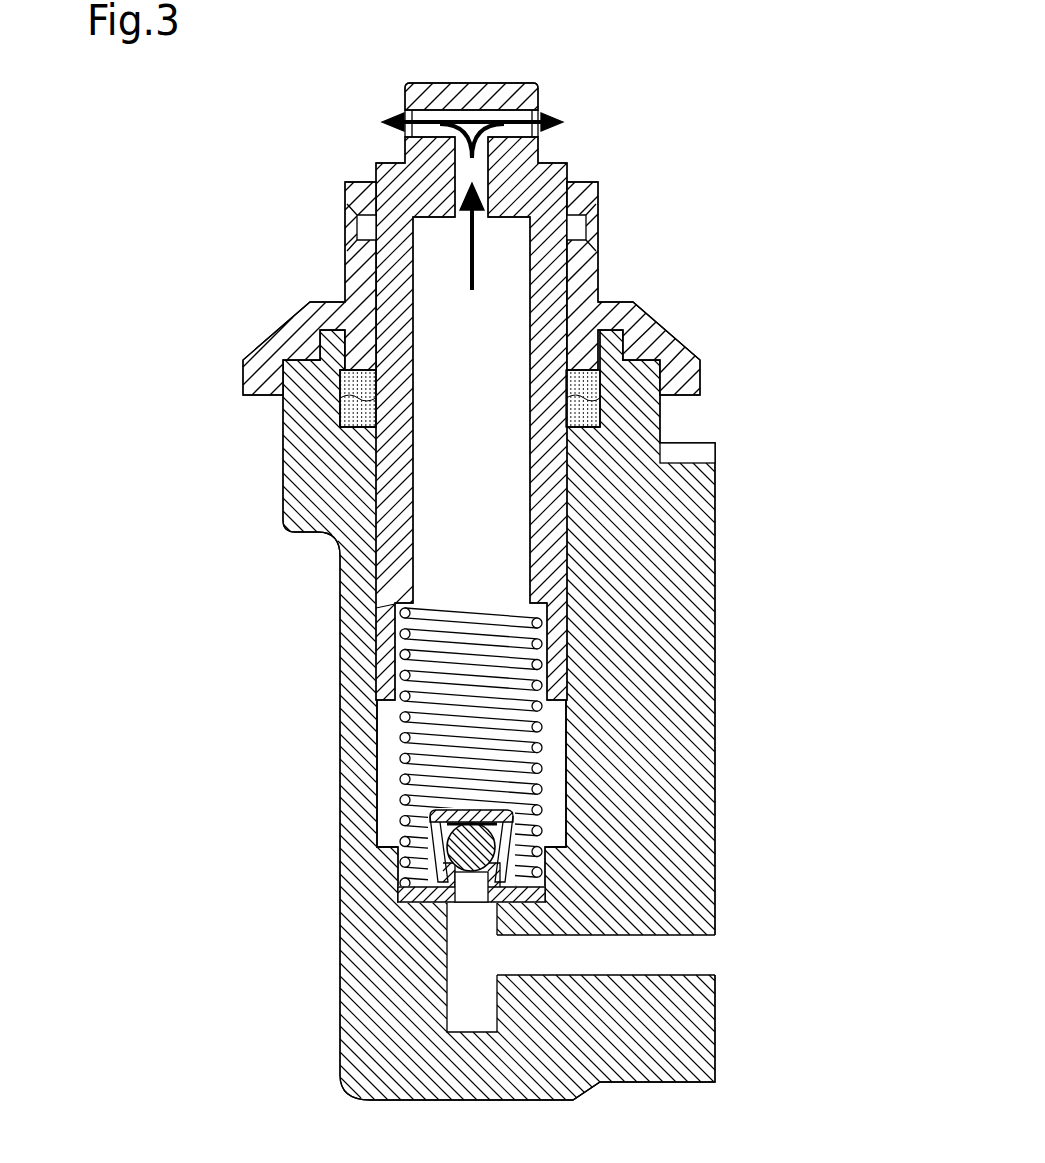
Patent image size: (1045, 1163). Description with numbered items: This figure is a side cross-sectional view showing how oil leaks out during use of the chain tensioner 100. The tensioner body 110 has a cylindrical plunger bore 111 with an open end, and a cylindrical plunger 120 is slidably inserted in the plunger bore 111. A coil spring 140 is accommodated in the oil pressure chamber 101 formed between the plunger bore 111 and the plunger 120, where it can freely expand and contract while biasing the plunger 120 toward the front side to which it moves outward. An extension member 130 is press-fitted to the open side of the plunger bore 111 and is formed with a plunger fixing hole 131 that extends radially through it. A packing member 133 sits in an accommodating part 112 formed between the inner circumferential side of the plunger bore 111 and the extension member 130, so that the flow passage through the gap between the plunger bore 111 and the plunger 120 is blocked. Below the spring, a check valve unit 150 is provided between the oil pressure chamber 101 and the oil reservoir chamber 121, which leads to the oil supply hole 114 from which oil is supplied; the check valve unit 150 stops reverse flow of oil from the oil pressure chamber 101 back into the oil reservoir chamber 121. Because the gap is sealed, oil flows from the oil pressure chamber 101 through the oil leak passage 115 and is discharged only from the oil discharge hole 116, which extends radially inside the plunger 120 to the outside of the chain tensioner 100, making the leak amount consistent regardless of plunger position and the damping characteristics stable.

The chain tensioner 100 is at (210, 104).
The oil pressure chamber 101 is at (497, 291).
The tensioner body 110 is at (338, 496).
The plunger bore 111 is at (383, 816).
The accommodating part 112 is at (650, 416).
The oil supply hole 114 is at (623, 953).
The oil leak passage 115 is at (478, 170).
The oil discharge hole 116 is at (470, 116).
The plunger 120 is at (395, 455).
The oil reservoir chamber 121 is at (468, 957).
The extension member 130 is at (345, 287).
The plunger fixing hole 131 is at (356, 230).
The packing member 133 is at (598, 380).
The coil spring 140 is at (397, 737).
The check valve unit 150 is at (432, 820).